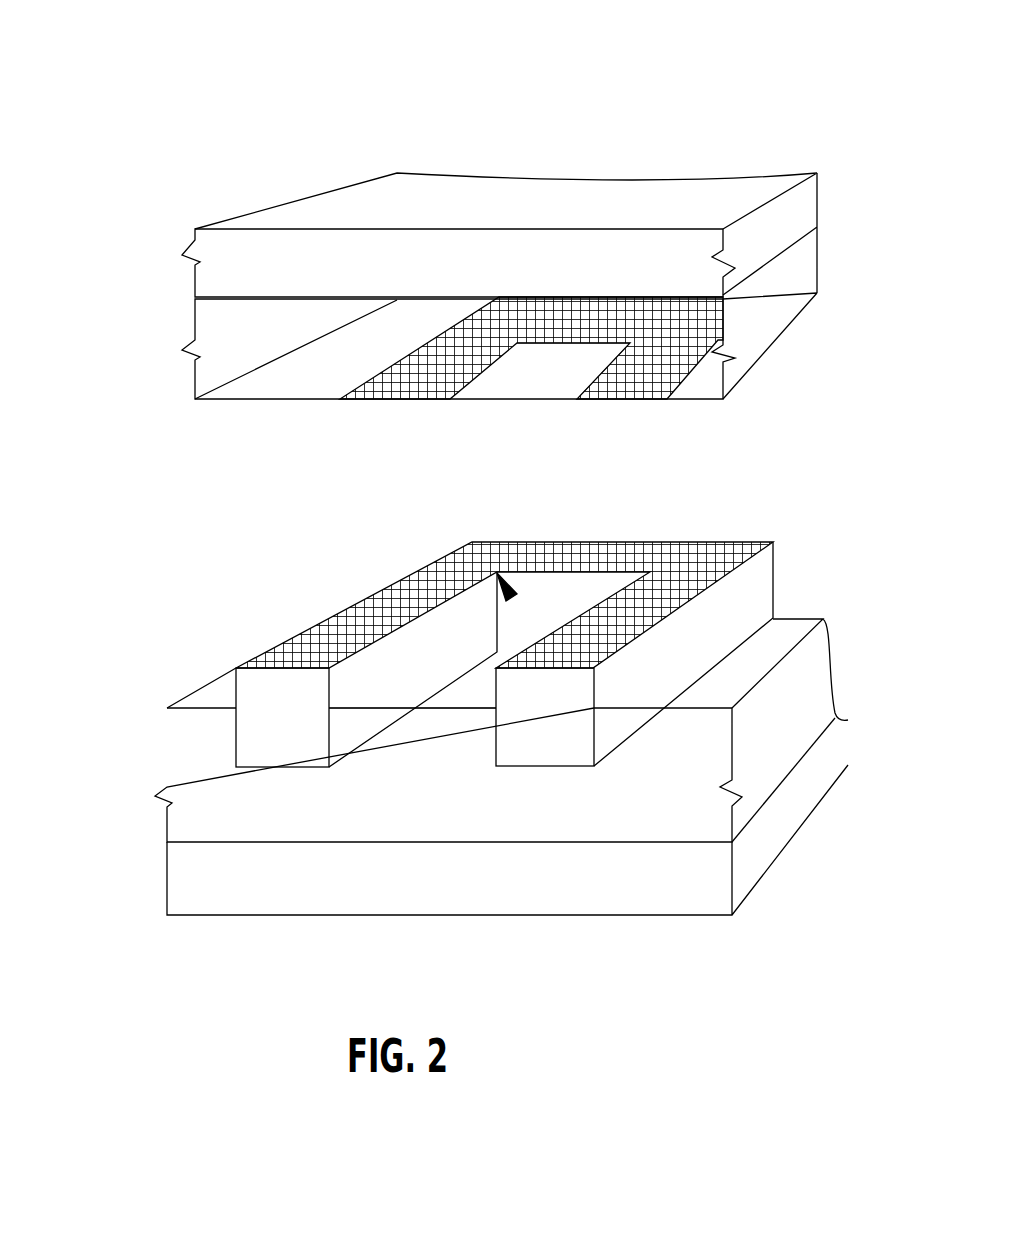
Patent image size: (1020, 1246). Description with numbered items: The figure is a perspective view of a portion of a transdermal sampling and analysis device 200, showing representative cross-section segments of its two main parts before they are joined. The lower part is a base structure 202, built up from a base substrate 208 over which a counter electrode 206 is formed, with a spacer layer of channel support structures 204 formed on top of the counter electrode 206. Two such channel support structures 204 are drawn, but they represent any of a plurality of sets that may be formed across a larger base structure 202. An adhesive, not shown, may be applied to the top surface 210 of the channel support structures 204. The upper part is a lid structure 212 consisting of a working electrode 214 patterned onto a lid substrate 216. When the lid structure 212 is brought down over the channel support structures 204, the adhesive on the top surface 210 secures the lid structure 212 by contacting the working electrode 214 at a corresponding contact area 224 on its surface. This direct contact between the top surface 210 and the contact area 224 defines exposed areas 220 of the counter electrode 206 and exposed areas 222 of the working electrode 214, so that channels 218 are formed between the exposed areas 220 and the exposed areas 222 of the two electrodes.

The transdermal sampling and analysis device 200 is at (848, 68).
The base structure 202 is at (120, 572).
The channel support structures 204 is at (762, 582).
The counter electrode 206 is at (815, 705).
The base substrate 208 is at (388, 907).
The top surface 210 is at (347, 610).
The lid structure 212 is at (118, 217).
The working electrode 214 is at (772, 308).
The lid substrate 216 is at (807, 203).
The channels 218 is at (490, 565).
The exposed areas of the counter electrode 220 is at (477, 685).
The exposed areas of the working electrode 222 is at (522, 370).
The contact area 224 is at (393, 385).